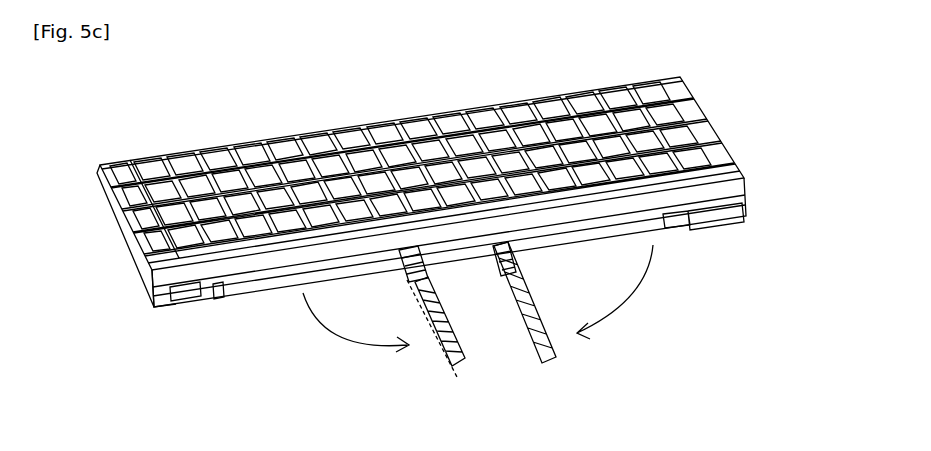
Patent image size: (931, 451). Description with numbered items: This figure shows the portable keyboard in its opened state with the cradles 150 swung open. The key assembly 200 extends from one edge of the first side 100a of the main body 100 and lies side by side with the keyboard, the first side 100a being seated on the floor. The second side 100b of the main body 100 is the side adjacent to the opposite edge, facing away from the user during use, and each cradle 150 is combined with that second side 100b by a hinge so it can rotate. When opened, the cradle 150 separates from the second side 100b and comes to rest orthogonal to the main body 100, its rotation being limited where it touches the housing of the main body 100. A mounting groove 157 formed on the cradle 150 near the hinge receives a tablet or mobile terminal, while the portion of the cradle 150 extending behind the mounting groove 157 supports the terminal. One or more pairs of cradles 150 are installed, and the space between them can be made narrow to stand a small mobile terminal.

The key assembly 200 is at (677, 89).
The main body 100 is at (746, 182).
The first side 100a is at (160, 305).
The second side 100b is at (183, 299).
The mounting groove 157 is at (420, 291).
The cradle 150 is at (451, 355).